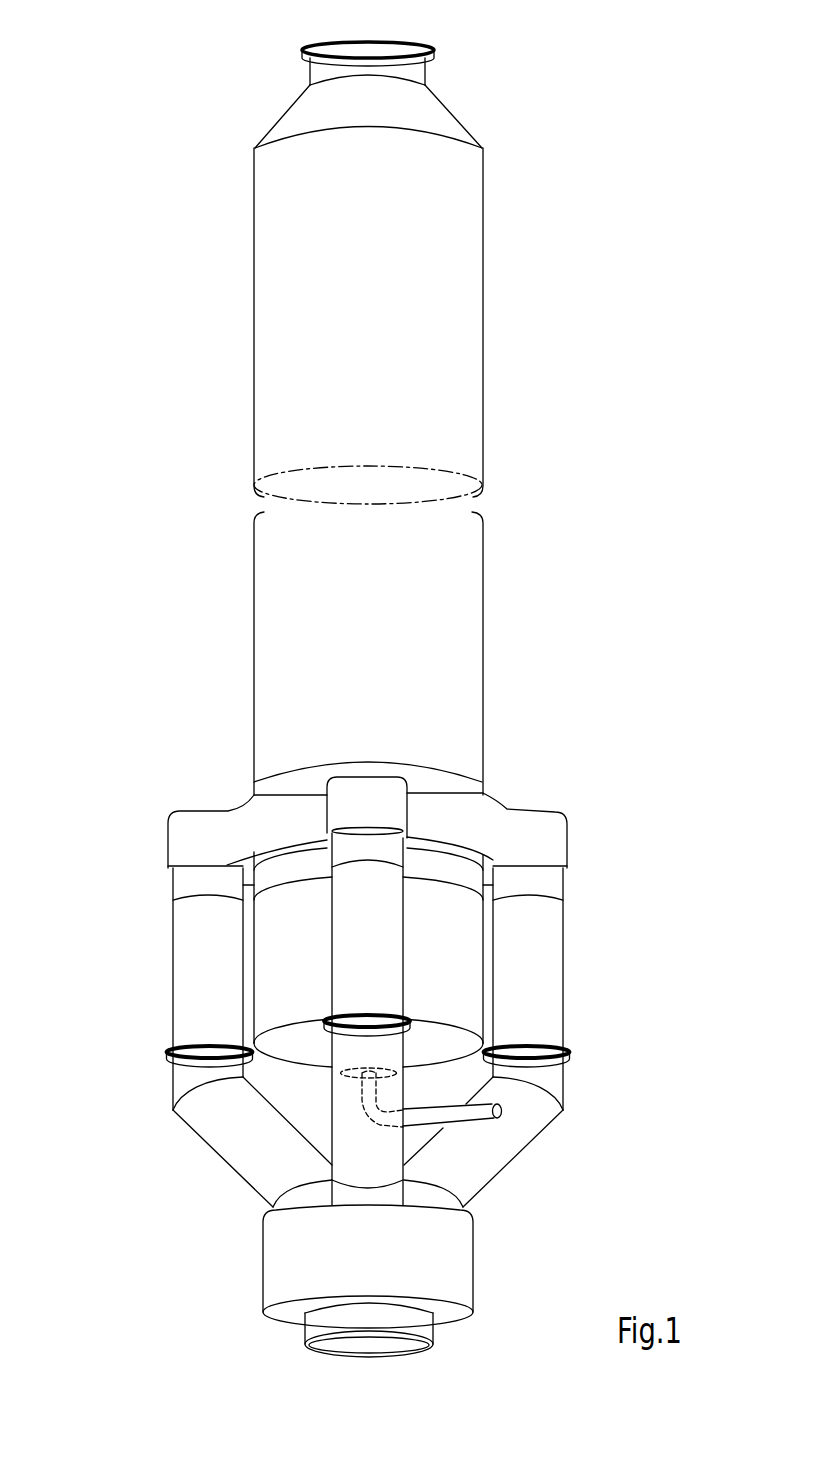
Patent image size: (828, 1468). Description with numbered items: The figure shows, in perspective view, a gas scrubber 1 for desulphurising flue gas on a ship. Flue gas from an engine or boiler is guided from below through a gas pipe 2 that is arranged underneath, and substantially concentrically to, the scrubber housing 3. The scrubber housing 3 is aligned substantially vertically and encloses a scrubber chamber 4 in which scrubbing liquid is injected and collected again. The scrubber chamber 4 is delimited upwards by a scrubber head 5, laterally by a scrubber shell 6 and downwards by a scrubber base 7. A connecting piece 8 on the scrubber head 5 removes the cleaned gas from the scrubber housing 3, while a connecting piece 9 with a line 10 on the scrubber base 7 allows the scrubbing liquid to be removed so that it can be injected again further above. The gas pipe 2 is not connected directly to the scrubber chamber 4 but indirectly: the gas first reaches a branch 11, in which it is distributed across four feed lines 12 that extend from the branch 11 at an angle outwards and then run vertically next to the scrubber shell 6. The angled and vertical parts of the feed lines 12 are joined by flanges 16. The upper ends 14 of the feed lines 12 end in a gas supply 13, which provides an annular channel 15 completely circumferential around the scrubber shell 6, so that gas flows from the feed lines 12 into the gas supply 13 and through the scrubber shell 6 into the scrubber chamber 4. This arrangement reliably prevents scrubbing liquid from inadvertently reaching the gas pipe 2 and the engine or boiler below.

The gas scrubber 1 is at (122, 190).
The gas pipe 2 is at (415, 1322).
The scrubber housing 3 is at (205, 644).
The scrubber chamber 4 is at (452, 488).
The scrubber head 5 is at (435, 117).
The scrubber shell 6 is at (468, 652).
The scrubber base 7 is at (308, 1042).
The connecting piece 8 is at (415, 73).
The connecting piece 9 is at (363, 1097).
The line 10 is at (482, 1113).
The branch 11 is at (455, 1260).
The feed lines 12 is at (190, 948).
The gas supply 13 is at (495, 823).
The upper ends 14 is at (362, 843).
The annular channel 15 is at (490, 857).
The flanges 16 is at (167, 1055).